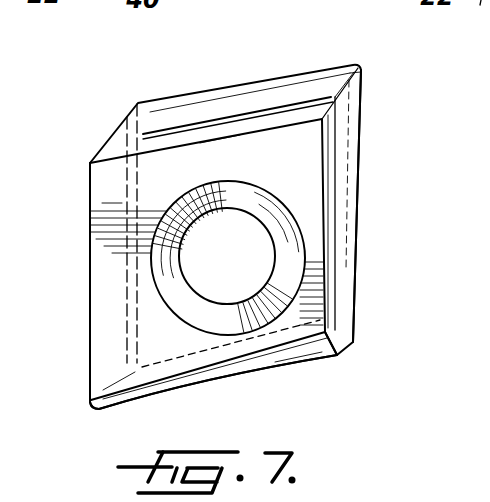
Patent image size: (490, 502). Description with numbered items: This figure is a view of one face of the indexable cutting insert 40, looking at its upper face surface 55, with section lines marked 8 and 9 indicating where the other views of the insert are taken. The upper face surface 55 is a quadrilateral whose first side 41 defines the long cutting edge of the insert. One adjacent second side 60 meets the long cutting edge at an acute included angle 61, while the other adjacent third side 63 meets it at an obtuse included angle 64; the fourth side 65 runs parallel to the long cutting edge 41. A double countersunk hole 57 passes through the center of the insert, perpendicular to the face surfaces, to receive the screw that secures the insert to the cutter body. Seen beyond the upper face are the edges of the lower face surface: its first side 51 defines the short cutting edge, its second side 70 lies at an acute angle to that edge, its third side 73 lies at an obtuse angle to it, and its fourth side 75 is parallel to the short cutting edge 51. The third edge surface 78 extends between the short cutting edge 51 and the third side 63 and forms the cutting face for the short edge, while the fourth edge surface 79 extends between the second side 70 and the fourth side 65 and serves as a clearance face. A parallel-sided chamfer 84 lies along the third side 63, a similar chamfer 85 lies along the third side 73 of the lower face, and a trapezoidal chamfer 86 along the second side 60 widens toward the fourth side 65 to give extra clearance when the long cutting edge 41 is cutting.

The insert 40 is at (365, 102).
The first side / long cutting edge 41 is at (88, 230).
The first side / short cutting edge 51 is at (177, 97).
The upper face surface 55 is at (300, 182).
The double countersunk hole 57 is at (205, 216).
The second side 60 is at (194, 355).
The acute included angle 61 is at (130, 372).
The third side 63 is at (218, 140).
The obtuse included angle 64 is at (121, 169).
The fourth side 65 is at (326, 130).
The second side 70 is at (347, 143).
The third side 73 is at (143, 188).
The fourth side 75 is at (172, 393).
The third edge surface 78 is at (307, 80).
The fourth edge surface 79 is at (340, 302).
The chamfer 84 is at (178, 138).
The chamfer 85 is at (126, 139).
The trapezoidal chamfer 86 is at (305, 350).
The section line 8- 8 is at (180, 63).
The section line 9- 9 is at (52, 240).